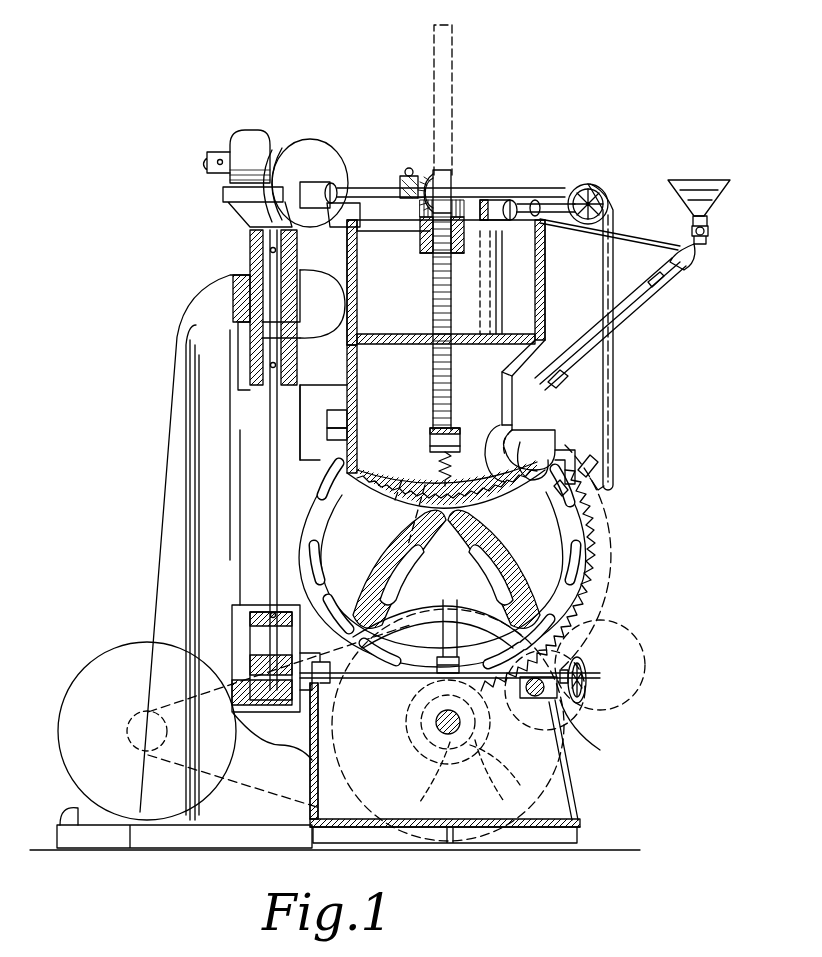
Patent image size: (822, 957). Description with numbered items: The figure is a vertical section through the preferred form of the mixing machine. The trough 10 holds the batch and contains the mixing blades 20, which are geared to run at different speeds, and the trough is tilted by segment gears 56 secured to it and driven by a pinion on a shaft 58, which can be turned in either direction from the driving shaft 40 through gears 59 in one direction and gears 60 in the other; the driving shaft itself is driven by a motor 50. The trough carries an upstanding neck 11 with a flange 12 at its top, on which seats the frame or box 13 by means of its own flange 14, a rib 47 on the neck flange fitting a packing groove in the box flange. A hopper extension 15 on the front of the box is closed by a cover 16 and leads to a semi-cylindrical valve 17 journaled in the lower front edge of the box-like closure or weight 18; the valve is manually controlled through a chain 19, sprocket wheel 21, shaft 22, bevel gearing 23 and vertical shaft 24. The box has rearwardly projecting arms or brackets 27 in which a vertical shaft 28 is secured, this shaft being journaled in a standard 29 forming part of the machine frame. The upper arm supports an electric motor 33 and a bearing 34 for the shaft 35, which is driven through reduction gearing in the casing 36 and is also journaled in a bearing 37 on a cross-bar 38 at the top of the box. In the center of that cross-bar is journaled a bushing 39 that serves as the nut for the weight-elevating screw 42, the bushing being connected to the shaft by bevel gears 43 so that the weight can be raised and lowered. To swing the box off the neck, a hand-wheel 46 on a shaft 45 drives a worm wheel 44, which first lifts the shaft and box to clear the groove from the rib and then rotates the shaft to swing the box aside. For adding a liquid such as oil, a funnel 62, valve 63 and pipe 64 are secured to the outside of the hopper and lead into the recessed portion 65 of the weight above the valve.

The trough 10 is at (590, 530).
The upstanding neck 11 is at (347, 462).
The flange 12 is at (326, 436).
The frame or box 13 is at (346, 394).
The flange 14 is at (326, 416).
The hopper extension 15 is at (535, 325).
The cover 16 is at (632, 242).
The semi-cylindrical valve 17 is at (520, 472).
The box-like closure or weight 18 is at (426, 423).
The chain 19 is at (614, 422).
The mixing blades 20 is at (472, 556).
The sprocket wheel 21 is at (604, 195).
The shaft 22 is at (552, 200).
The bevel gearing 23 is at (492, 199).
The vertical shaft 24 is at (494, 296).
The arms or brackets 27 is at (289, 330).
The vertical shaft 28 is at (270, 486).
The standard 29 is at (210, 488).
The electric motor 33 is at (260, 135).
The bearing 34 is at (330, 186).
The shaft 35 is at (380, 189).
The casing 36 is at (325, 152).
The bearing 37 is at (405, 175).
The cross-bar 38 is at (446, 282).
The bushing 39 is at (420, 254).
The driving shaft 40 is at (438, 734).
The weight-elevating screw 42 is at (432, 286).
The bevel gears 43 is at (455, 172).
The worm wheel 44 is at (250, 670).
The shaft 45 is at (388, 680).
The hand-wheel 46 is at (590, 676).
The rib 47 is at (380, 425).
The motor 50 is at (147, 731).
The segment gears 56 is at (600, 612).
The shaft 58 is at (590, 730).
The gears 59 is at (482, 760).
The gears 60 is at (447, 755).
The funnel 62 is at (716, 190).
The valve 63 is at (710, 230).
The pipe 64 is at (636, 320).
The recessed portion 65 is at (542, 438).